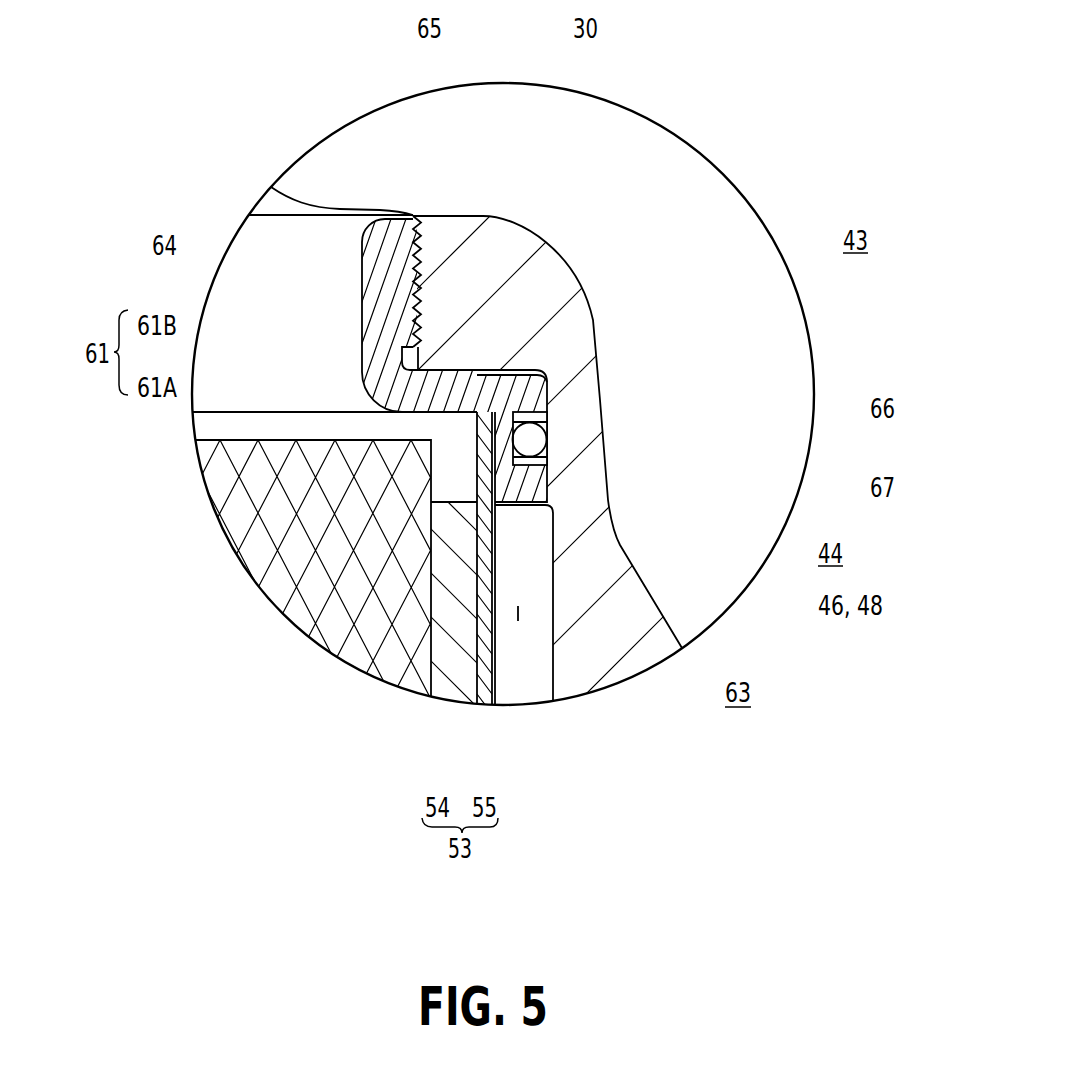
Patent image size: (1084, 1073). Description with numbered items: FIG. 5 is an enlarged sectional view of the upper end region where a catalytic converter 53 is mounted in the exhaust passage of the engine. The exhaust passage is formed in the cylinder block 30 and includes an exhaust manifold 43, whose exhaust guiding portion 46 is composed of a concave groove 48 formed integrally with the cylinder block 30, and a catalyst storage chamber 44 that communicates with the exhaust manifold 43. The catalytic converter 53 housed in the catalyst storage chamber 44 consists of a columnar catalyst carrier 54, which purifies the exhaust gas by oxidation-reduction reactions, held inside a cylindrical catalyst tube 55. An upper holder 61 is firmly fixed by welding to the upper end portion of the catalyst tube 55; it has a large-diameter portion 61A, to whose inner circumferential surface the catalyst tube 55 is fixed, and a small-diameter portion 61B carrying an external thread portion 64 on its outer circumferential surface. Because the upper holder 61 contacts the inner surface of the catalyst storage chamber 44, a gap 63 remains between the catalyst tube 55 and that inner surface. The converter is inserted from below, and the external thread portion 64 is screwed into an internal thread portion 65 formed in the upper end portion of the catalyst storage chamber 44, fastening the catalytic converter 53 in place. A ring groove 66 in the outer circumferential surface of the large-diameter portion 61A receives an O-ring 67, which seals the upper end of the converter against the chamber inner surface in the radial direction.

The cylinder block 30 is at (515, 257).
The exhaust manifold 43 is at (718, 272).
The catalyst storage chamber 44 is at (553, 533).
The exhaust guiding portion 46 is at (713, 574).
The concave groove 48 is at (677, 625).
The catalytic converter 53 is at (347, 601).
The catalyst carrier 54 is at (383, 670).
The catalyst tube 55 is at (489, 663).
The upper holder 61 is at (523, 272).
The large-diameter portion 61A is at (523, 424).
The small-diameter portion 61B is at (412, 272).
The gap 63 is at (724, 693).
The external thread portion 64 is at (410, 257).
The internal thread portion 65 is at (430, 42).
The ring groove 66 is at (870, 407).
The O-ring 67 is at (537, 447).